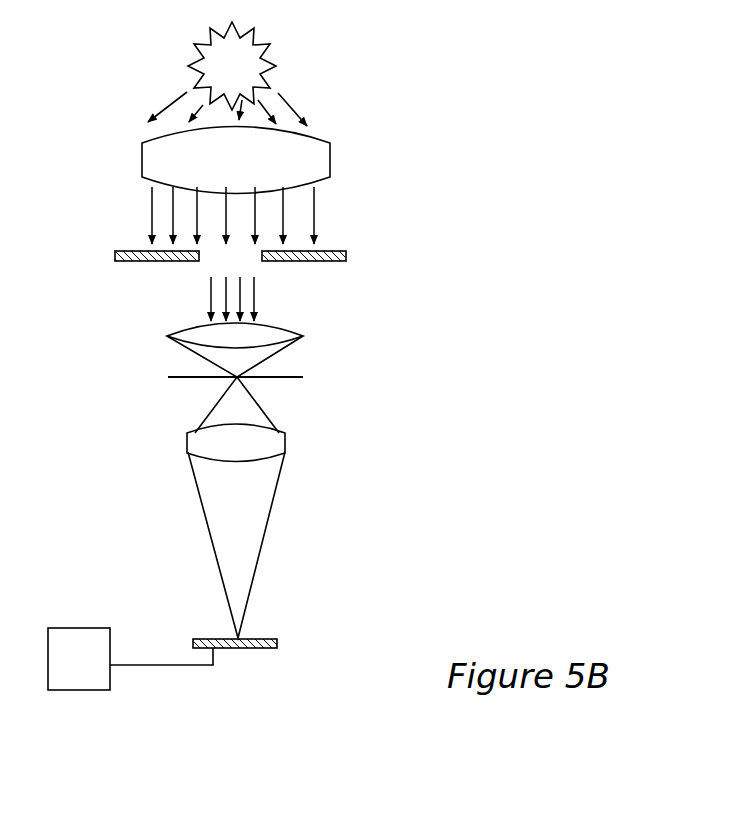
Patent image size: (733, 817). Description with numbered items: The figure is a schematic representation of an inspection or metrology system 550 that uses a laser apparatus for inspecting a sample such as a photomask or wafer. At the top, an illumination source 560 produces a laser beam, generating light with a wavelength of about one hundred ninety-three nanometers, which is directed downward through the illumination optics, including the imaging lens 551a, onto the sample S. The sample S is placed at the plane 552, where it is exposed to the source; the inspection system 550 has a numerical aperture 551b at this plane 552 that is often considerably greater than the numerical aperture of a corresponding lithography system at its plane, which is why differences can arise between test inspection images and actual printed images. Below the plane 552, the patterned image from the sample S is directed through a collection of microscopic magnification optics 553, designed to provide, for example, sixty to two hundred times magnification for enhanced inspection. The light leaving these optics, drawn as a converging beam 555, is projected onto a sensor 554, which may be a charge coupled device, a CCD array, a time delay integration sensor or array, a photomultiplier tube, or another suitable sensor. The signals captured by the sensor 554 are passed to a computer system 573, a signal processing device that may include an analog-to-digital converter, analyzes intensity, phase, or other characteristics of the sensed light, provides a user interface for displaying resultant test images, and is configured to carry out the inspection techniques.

The inspection system 550 is at (358, 61).
The illumination source 560 is at (258, 38).
The imaging lens 551a is at (90, 113).
The numerical aperture 551b is at (266, 360).
The plane 552 is at (157, 378).
The sample S is at (285, 378).
The magnification optics 553 is at (230, 511).
The converging light beam 555 is at (235, 528).
The sensor 554 is at (258, 637).
The computer system 573 is at (130, 659).